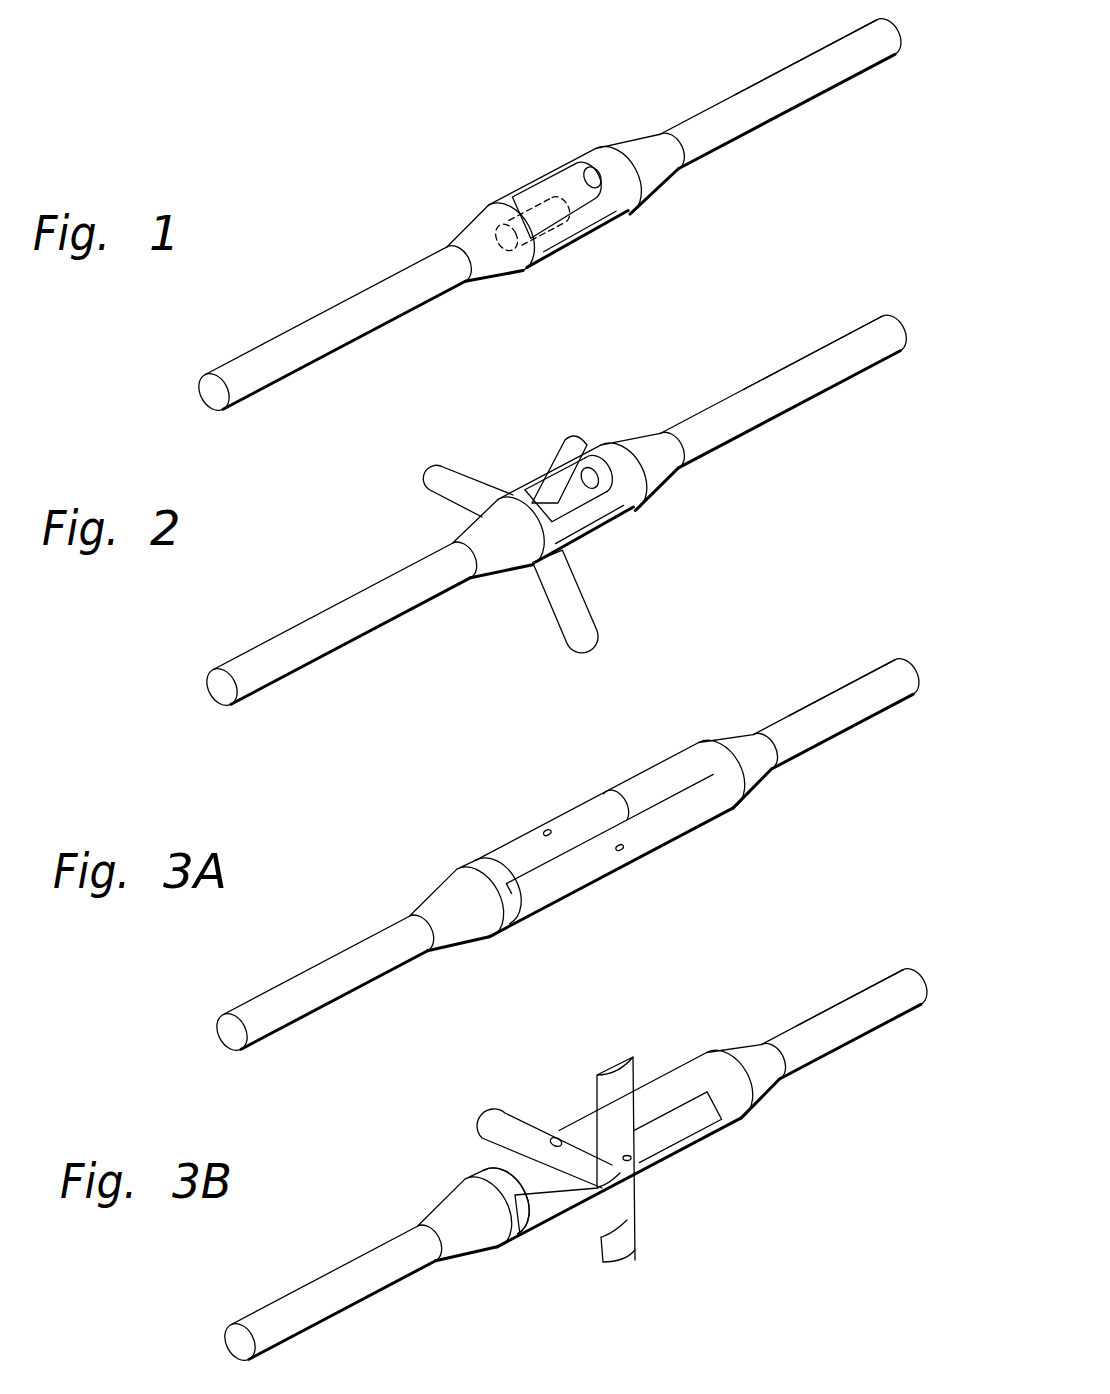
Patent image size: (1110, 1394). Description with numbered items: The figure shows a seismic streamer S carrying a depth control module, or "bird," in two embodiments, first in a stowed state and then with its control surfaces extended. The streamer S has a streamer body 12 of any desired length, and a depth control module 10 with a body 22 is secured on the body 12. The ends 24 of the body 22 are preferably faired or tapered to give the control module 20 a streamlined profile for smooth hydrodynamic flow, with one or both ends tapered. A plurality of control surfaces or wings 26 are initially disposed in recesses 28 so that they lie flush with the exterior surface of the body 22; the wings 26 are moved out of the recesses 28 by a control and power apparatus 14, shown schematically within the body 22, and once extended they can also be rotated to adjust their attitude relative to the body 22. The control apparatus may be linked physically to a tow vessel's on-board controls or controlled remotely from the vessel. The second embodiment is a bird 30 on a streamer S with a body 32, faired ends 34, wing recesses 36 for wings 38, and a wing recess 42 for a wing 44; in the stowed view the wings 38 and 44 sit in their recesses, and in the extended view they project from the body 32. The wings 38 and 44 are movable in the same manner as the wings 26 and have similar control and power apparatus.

In FIG. 1, the depth control module 10 is at (662, 229).
In FIG. 1, the streamer body 12 is at (817, 93).
In FIG. 2, the streamer body 12 is at (815, 395).
In FIG. 3A, the streamer body 12 is at (833, 735).
In FIG. 3B, the streamer body 12 is at (846, 1048).
In FIG. 1, the control and power apparatus 14 is at (490, 213).
In FIG. 1, the control module 20 is at (510, 200).
In FIG. 2, the control module 20 is at (518, 490).
In FIG. 1, the body 22 is at (613, 210).
In FIG. 2, the body 22 is at (622, 505).
In FIG. 1, the ends 24 is at (628, 148).
In FIG. 2, the ends 24 is at (637, 442).
In FIG. 1, the wings 26 is at (553, 183).
In FIG. 2, the wings 26 is at (567, 463).
In FIG. 1, the recesses 28 is at (584, 180).
In FIG. 2, the recesses 28 is at (594, 475).
In FIG. 2, the bird 30 is at (668, 527).
In FIG. 3A, the bird 30 is at (680, 868).
In FIG. 3B, the bird 30 is at (688, 1181).
In FIG. 3A, the body 32 is at (667, 776).
In FIG. 3B, the body 32 is at (673, 1088).
In FIG. 3A, the faired ends 34 is at (738, 746).
In FIG. 3B, the faired ends 34 is at (748, 1058).
In FIG. 3A, the wing recesses 36 is at (496, 868).
In FIG. 3B, the wing recesses 36 is at (510, 1170).
In FIG. 3A, the wings 38 is at (578, 824).
In FIG. 3B, the wings 38 is at (513, 1120).
In FIG. 3A, the wing recess 42 is at (530, 907).
In FIG. 3B, the wing recess 42 is at (540, 1207).
In FIG. 3A, the wing 44 is at (552, 892).
In FIG. 3B, the wing 44 is at (617, 1080).
In FIG. 1, the seismic streamer S is at (818, 50).
In FIG. 2, the seismic streamer S is at (820, 345).
In FIG. 3A, the seismic streamer S is at (835, 688).
In FIG. 3B, the seismic streamer S is at (845, 1000).